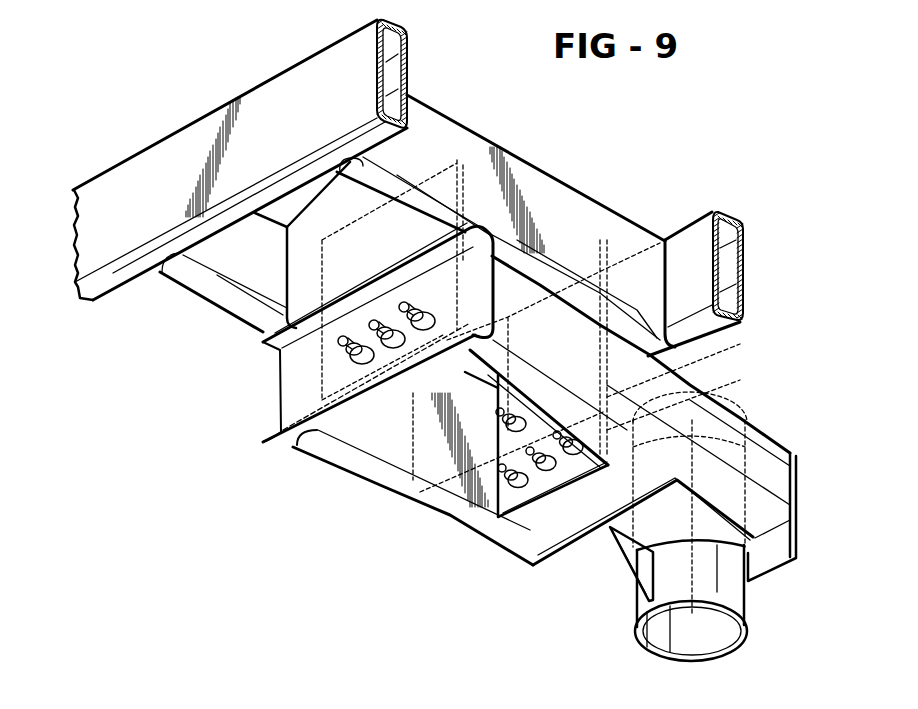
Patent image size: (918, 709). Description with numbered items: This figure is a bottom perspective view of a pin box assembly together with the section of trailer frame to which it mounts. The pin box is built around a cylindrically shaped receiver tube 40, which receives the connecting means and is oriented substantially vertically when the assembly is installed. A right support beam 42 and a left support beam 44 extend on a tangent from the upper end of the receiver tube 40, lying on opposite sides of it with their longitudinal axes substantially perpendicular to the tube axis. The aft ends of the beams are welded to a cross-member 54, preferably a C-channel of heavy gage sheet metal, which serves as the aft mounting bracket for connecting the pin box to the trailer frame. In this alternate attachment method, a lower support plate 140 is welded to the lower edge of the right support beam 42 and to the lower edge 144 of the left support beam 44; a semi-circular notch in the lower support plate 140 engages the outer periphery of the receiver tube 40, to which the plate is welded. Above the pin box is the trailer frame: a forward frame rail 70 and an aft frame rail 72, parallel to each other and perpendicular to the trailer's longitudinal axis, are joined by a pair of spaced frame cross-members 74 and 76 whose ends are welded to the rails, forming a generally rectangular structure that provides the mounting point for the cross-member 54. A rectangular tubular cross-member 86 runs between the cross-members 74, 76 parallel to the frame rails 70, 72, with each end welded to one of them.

The receiver tube 40 is at (730, 588).
The right support beam 42 is at (767, 460).
The left support beam 44 is at (448, 513).
The cross-member 54 is at (268, 443).
The forward frame rail 70 is at (693, 240).
The aft frame rail 72 is at (138, 183).
The frame cross-member 74 is at (570, 210).
The frame cross-member 76 is at (228, 300).
The tubular cross-member 86 is at (327, 213).
The lower support plate 140 is at (593, 572).
The lower edge of left support beam 144 is at (649, 601).